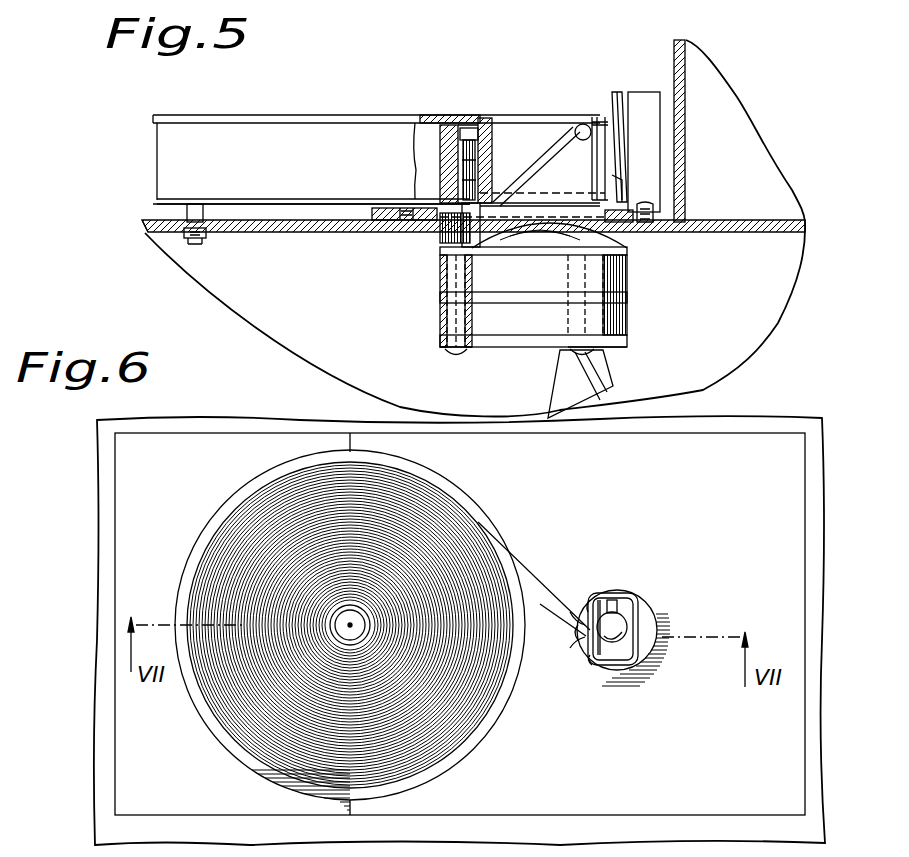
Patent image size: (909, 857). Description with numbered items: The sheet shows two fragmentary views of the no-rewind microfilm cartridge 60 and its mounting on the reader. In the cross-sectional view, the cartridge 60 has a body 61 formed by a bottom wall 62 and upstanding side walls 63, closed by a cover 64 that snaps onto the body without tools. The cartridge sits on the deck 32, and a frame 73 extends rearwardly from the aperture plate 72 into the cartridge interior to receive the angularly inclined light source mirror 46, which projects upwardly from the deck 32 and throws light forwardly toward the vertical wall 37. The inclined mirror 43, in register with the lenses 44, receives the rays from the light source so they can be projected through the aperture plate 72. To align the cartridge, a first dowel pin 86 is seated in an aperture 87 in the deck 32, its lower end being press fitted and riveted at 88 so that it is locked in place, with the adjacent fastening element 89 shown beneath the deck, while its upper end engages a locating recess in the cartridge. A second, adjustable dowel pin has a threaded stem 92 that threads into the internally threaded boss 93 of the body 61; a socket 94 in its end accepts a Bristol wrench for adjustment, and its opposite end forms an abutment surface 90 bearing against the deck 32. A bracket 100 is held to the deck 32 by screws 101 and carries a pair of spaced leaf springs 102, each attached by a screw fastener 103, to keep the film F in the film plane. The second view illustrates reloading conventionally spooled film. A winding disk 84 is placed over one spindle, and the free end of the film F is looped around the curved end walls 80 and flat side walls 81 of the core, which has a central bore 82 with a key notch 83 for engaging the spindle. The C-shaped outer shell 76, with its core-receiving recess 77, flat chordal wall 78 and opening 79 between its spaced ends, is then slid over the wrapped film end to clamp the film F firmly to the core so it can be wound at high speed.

In FIG. 5, the deck 32 is at (300, 232).
In FIG. 5, the vertical wall 37 is at (674, 60).
In FIG. 5, the angularly inclined mirror 43 is at (608, 392).
In FIG. 5, the lenses 44 is at (533, 333).
In FIG. 5, the light source mirror 46 is at (548, 150).
In FIG. 5, the cartridge 60 is at (342, 134).
In FIG. 5, the body 61 is at (154, 202).
In FIG. 5, the bottom wall 62 is at (295, 176).
In FIG. 5, the side walls 63 is at (168, 162).
In FIG. 5, the cover 64 is at (373, 118).
In FIG. 5, the aperture plate 72 is at (598, 84).
In FIG. 5, the frame 73 is at (495, 160).
In FIG. 6, the outer shell 76 is at (604, 588).
In FIG. 6, the core-receiving recess 77 is at (624, 592).
In FIG. 6, the flat chordal wall 78 is at (638, 620).
In FIG. 6, the opening 79 is at (573, 638).
In FIG. 6, the curved end walls 80 is at (593, 598).
In FIG. 6, the flat side walls 81 is at (582, 622).
In FIG. 6, the central bore 82 is at (615, 640).
In FIG. 6, the key notch 83 is at (613, 598).
In FIG. 6, the winding disk 84 is at (454, 772).
In FIG. 5, the first dowel pin 86 is at (201, 210).
In FIG. 5, the aperture 87 is at (172, 230).
In FIG. 5, the rivet 88 is at (190, 238).
In FIG. 5, the washer 89 is at (208, 240).
In FIG. 5, the abutment surface 90 is at (496, 218).
In FIG. 5, the threaded stem 92 is at (452, 150).
In FIG. 5, the boss 93 is at (490, 212).
In FIG. 5, the socket 94 is at (476, 140).
In FIG. 5, the bracket 100 is at (648, 156).
In FIG. 5, the screws 101 is at (660, 201).
In FIG. 5, the leaf springs 102 is at (616, 188).
In FIG. 5, the screw fastener 103 is at (623, 157).
In FIG. 6, the film F is at (527, 562).